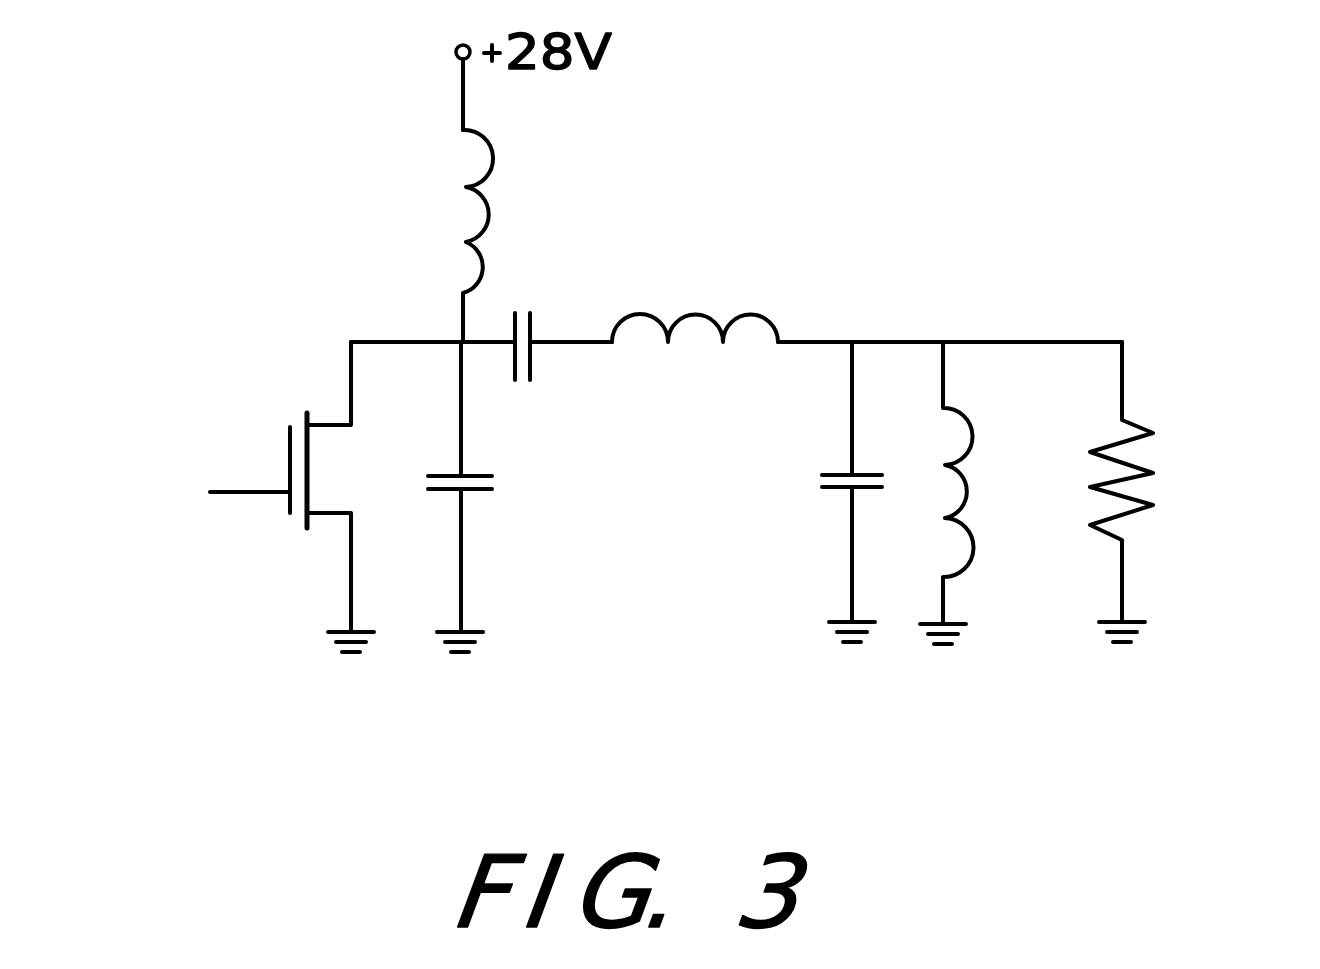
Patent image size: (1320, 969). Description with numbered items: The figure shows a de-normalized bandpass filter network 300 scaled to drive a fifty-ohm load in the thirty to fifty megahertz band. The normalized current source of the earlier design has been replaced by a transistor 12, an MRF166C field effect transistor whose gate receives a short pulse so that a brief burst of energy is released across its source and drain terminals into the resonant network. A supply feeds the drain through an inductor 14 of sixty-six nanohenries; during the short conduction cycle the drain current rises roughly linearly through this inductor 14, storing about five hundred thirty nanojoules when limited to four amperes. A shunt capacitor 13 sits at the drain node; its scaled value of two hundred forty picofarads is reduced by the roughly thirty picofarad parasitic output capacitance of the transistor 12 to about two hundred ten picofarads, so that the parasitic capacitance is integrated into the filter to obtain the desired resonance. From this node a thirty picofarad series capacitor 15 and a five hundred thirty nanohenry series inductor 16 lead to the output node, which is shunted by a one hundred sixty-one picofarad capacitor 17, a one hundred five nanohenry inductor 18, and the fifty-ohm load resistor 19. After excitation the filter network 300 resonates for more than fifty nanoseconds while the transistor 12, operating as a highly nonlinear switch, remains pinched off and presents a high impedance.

The transistor 12 is at (328, 417).
The capacitor 13 is at (472, 492).
The inductor 14 is at (492, 203).
The capacitor 15 is at (533, 367).
The inductor 16 is at (703, 310).
The capacitor 17 is at (832, 488).
The inductor 18 is at (970, 493).
The load resistor 19 is at (1147, 463).
The filter network 300 is at (857, 285).